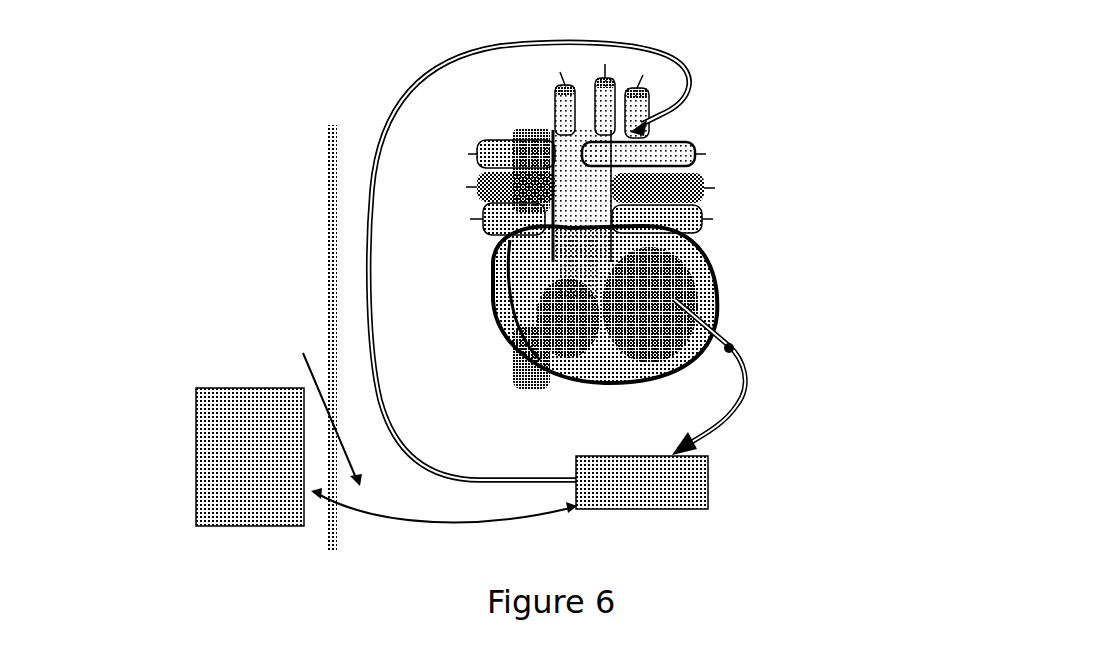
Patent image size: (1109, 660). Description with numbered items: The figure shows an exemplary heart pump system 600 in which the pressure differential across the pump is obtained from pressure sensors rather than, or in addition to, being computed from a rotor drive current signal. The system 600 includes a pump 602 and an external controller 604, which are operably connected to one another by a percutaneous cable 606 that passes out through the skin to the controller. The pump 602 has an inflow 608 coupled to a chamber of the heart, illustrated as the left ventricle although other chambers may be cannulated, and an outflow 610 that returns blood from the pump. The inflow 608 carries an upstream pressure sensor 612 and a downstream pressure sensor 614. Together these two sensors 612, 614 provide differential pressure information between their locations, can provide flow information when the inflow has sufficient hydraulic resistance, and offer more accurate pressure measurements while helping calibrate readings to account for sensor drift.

The heart pump system 600 is at (471, 308).
The pump 602 is at (740, 511).
The external controller 604 is at (158, 488).
The percutaneous cable 606 is at (285, 400).
The inflow 608 is at (747, 377).
The outflow 610 is at (519, 432).
The upstream pressure sensor 612 is at (747, 350).
The downstream pressure sensor 614 is at (733, 419).